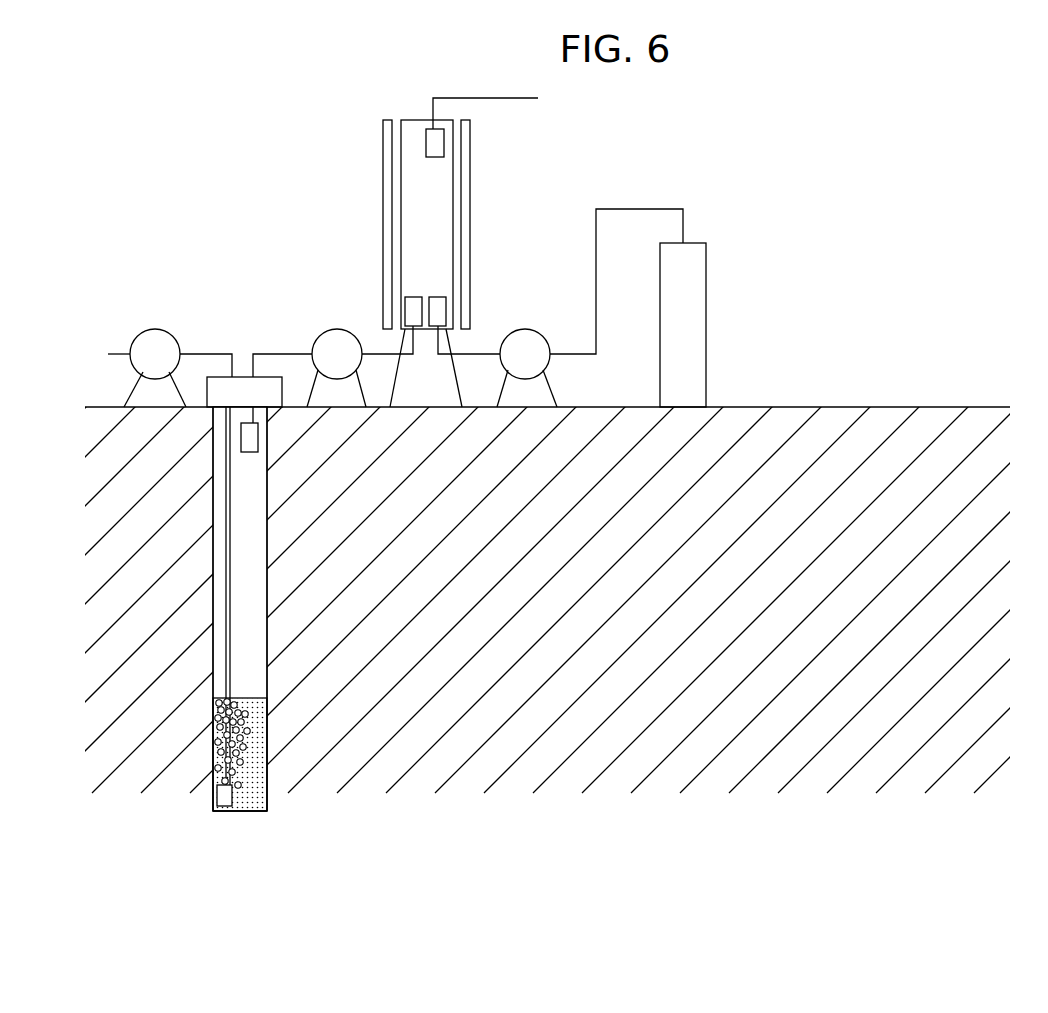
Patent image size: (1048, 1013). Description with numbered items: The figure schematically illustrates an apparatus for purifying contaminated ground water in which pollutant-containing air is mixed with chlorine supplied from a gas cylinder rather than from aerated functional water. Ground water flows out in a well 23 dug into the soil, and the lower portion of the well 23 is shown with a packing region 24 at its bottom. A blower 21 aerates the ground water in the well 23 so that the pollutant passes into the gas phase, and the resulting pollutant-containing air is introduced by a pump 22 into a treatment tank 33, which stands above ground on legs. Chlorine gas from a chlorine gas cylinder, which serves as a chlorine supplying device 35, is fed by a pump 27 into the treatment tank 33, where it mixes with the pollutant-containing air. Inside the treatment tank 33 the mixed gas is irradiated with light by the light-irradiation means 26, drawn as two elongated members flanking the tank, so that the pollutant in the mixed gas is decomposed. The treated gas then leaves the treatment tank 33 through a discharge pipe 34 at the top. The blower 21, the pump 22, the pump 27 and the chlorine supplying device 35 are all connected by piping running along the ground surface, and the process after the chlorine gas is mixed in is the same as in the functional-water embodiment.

The blower 21 is at (150, 330).
The pump 22 is at (343, 330).
The well 23 is at (218, 506).
The filter packing 24 is at (222, 798).
The light-irradiation means 26 is at (386, 205).
The pump 27 is at (522, 338).
The treatment tank 33 is at (445, 195).
The discharge pipe 34 is at (515, 98).
The chlorine supplying device 35 is at (692, 245).